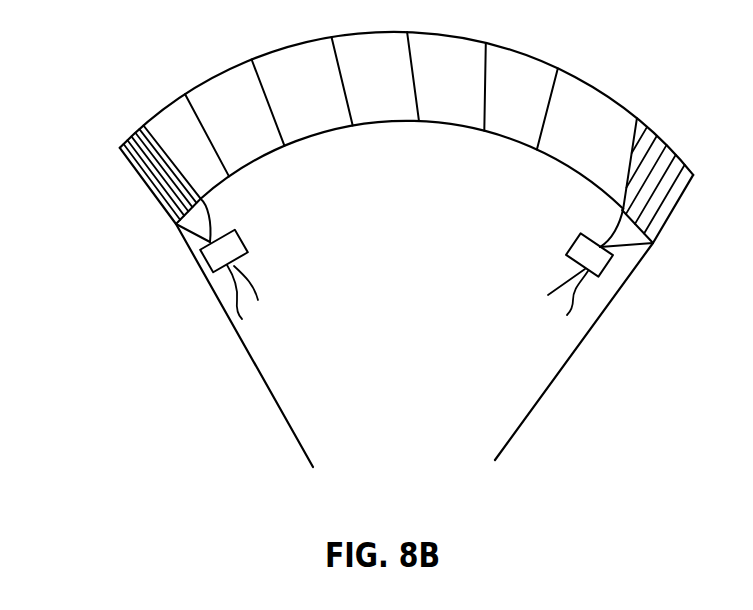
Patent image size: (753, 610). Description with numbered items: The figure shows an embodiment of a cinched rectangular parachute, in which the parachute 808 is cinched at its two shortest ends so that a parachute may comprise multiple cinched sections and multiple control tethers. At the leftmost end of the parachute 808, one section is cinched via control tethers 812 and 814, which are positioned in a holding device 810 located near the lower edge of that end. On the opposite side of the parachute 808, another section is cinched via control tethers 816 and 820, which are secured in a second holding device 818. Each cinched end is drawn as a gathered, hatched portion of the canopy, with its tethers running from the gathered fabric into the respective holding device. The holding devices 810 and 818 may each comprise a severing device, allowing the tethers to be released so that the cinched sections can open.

The parachute 808 is at (133, 172).
The holding device 810 is at (197, 262).
The control tether 812 is at (247, 277).
The control tether 814 is at (241, 322).
The control tether 816 is at (617, 220).
The holding device 818 is at (573, 245).
The control tether 820 is at (570, 288).